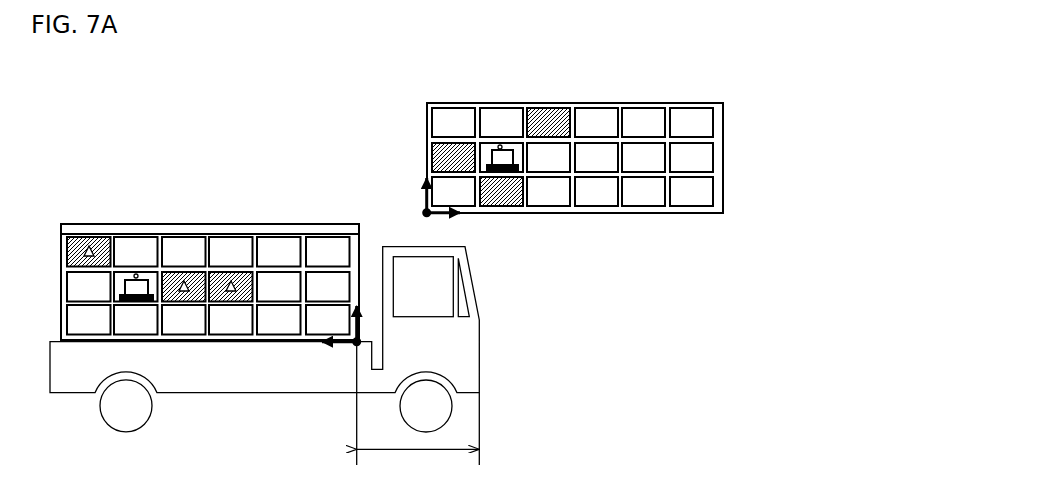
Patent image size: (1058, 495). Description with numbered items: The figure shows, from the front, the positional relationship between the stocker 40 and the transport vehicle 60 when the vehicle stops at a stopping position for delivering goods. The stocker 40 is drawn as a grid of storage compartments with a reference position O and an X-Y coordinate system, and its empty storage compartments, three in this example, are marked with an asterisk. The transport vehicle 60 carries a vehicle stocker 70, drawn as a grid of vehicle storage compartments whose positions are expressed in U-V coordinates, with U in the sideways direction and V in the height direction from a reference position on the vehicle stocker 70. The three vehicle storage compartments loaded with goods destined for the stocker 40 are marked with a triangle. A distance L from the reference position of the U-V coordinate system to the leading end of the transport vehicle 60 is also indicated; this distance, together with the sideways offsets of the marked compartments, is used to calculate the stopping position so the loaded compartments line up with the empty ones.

The stocker 40 is at (662, 81).
The transport vehicle 60 is at (487, 264).
The vehicle stocker 70 is at (258, 197).